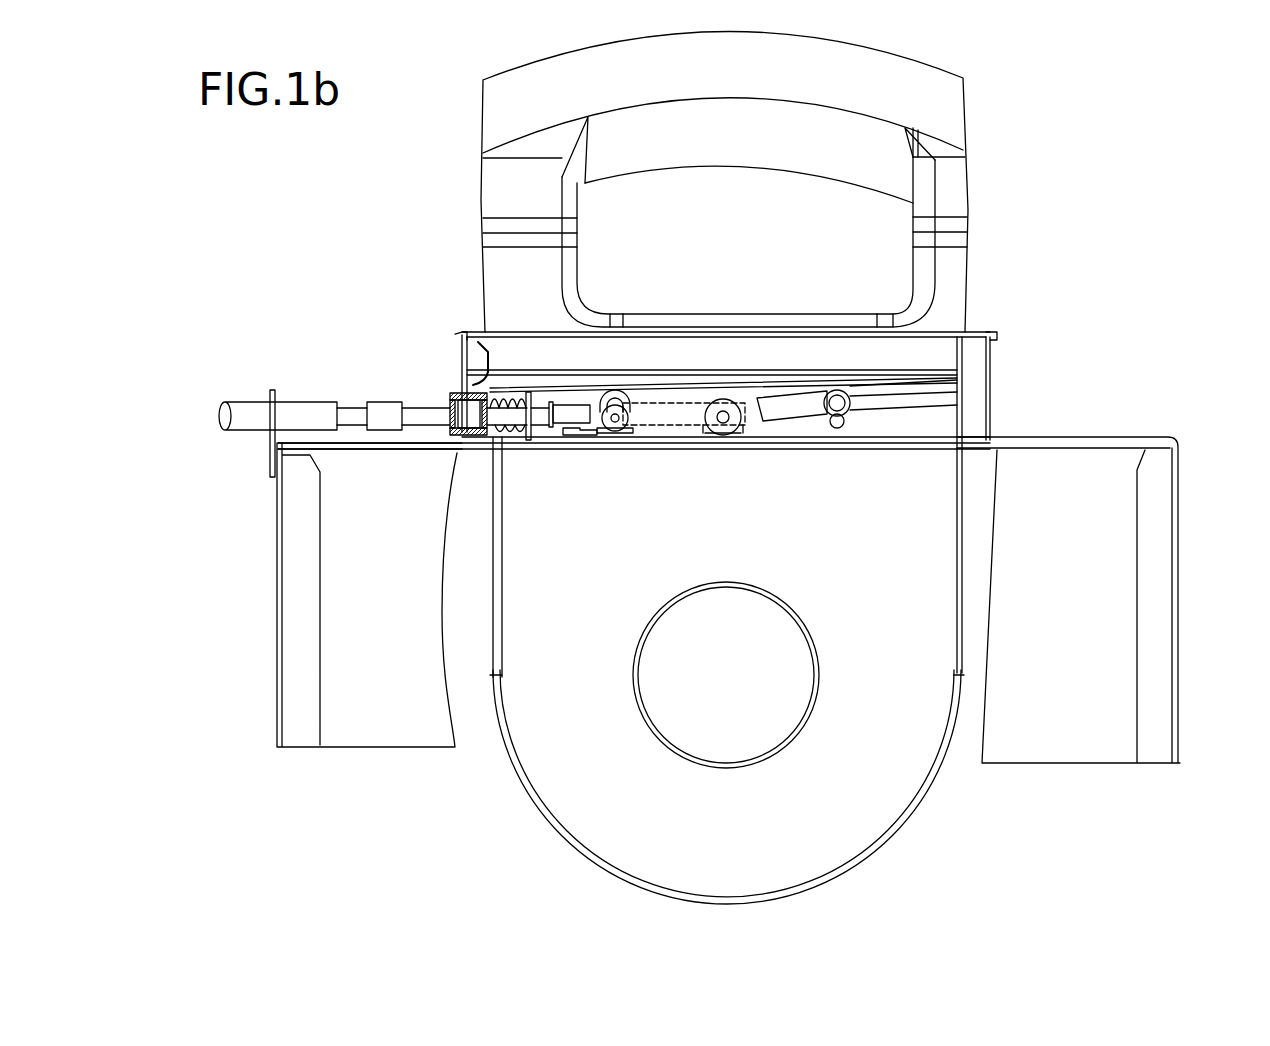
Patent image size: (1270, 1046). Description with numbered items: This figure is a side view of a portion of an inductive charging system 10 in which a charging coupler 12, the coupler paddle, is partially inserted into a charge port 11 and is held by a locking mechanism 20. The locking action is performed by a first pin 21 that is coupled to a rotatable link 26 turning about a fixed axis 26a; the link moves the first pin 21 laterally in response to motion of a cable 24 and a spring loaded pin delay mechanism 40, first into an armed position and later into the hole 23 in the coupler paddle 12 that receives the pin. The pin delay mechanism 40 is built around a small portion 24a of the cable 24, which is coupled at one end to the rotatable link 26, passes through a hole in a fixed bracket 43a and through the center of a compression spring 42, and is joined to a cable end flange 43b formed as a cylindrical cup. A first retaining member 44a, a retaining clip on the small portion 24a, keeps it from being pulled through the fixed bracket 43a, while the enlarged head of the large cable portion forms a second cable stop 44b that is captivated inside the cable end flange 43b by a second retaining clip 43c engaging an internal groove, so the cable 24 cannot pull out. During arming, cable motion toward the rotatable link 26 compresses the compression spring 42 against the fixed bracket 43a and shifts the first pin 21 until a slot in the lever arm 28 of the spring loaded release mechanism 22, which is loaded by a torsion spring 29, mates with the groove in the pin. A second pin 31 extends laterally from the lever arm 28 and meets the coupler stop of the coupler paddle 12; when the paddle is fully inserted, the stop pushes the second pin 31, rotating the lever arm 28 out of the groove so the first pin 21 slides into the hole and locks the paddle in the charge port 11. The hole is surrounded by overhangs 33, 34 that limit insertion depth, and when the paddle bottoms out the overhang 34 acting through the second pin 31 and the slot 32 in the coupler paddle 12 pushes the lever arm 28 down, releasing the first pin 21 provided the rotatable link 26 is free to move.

The inductive charging system 10 is at (1207, 134).
The charge port 11 is at (277, 748).
The charging coupler 12 is at (967, 127).
The locking mechanism 20 is at (293, 233).
The first pin 21 is at (621, 431).
The spring loaded release mechanism 22 is at (779, 493).
The roller cover 23 is at (624, 390).
The cable 24 is at (257, 402).
The small portion of the cable 24a is at (575, 406).
The rotatable link 26 is at (598, 432).
The fixed axis 26a is at (573, 437).
The lever arm 28 is at (677, 422).
The torsion spring 29 is at (736, 440).
The second pin 31 is at (829, 421).
The slot 32 is at (848, 419).
The overhang 33 is at (617, 389).
The overhang 34 is at (920, 396).
The spring loaded pin delay mechanism 40 is at (396, 384).
The compression spring 42 is at (486, 425).
The fixed bracket 43a is at (530, 441).
The cable end flange 43b is at (455, 393).
The second retaining clip 43c is at (452, 434).
The first retaining member 44a is at (550, 405).
The second cable stop 44b is at (497, 437).